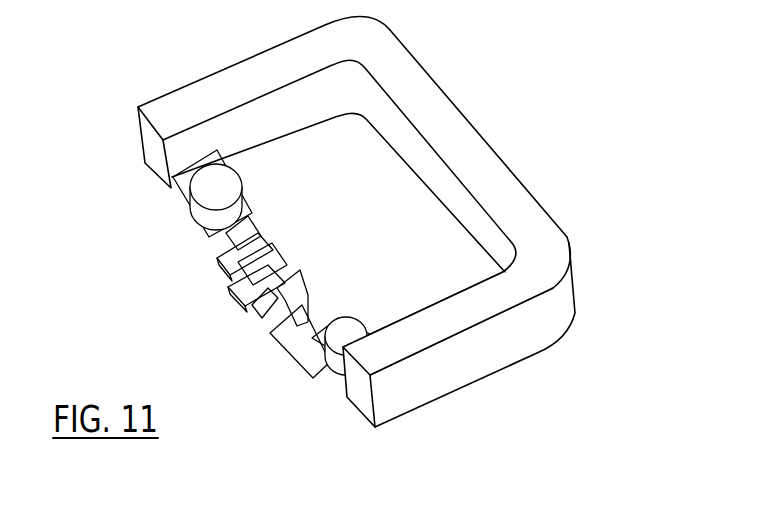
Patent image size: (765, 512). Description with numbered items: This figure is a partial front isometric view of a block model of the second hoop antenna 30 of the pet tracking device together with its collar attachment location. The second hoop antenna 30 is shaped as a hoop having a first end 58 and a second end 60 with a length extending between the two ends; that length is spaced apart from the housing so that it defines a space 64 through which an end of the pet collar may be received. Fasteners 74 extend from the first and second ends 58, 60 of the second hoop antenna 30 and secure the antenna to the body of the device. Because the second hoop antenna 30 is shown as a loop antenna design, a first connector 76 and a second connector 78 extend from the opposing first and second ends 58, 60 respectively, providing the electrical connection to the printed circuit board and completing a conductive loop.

The second hoop antenna 30 is at (523, 360).
The first end 58 is at (140, 140).
The second end 60 is at (357, 388).
The space 64 is at (465, 137).
The fasteners 74 is at (225, 183).
The first connector 76 is at (213, 268).
The second connector 78 is at (233, 293).